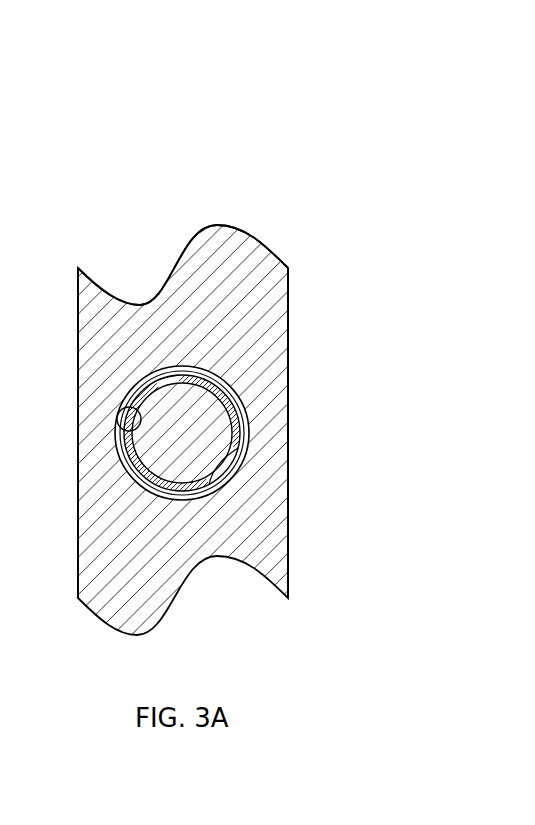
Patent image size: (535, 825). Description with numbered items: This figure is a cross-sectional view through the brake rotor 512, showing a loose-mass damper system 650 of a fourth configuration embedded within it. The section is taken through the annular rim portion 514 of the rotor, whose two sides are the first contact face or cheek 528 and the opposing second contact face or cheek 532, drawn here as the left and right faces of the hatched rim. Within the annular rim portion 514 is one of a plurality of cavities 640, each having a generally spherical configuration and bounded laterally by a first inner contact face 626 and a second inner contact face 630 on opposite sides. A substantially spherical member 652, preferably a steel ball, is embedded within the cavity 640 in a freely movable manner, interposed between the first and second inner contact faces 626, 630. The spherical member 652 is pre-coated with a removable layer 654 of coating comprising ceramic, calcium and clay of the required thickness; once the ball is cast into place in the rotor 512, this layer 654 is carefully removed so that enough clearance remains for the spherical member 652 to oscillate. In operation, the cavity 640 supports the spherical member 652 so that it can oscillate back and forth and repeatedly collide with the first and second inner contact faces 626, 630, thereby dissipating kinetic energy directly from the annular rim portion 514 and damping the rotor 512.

The loose-mass damper system 650 is at (267, 342).
The annular rim portion 514 is at (253, 237).
The cavity 640 is at (163, 388).
The removable layer of coating 654 is at (288, 371).
The brake rotor 512 is at (395, 392).
The first inner contact face 626 is at (118, 411).
The spherical member 652 is at (200, 446).
The second inner contact face 630 is at (246, 431).
The first contact face 528 is at (68, 530).
The second contact face 532 is at (300, 543).